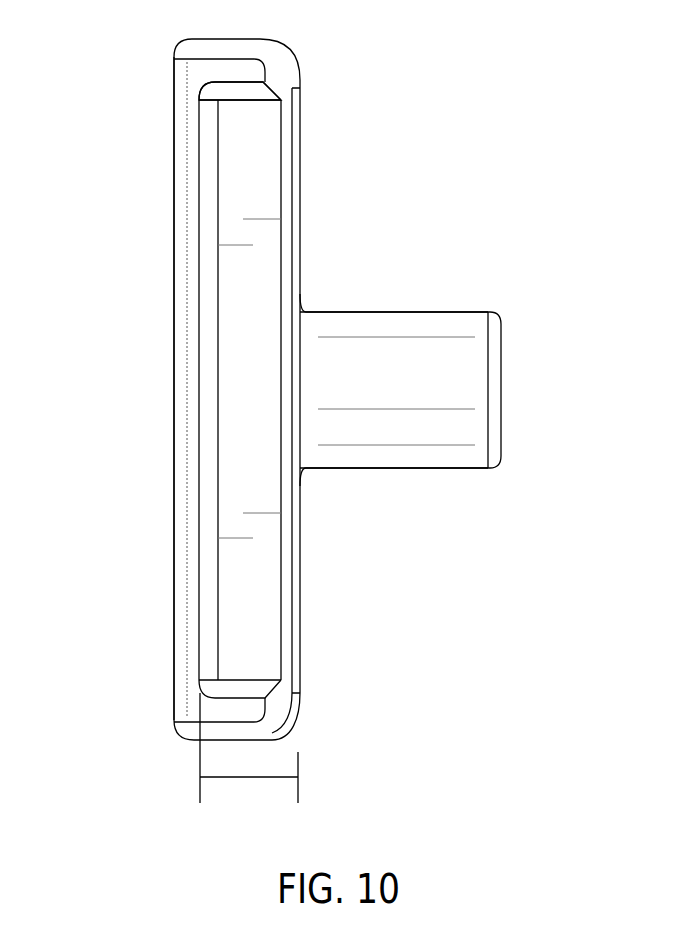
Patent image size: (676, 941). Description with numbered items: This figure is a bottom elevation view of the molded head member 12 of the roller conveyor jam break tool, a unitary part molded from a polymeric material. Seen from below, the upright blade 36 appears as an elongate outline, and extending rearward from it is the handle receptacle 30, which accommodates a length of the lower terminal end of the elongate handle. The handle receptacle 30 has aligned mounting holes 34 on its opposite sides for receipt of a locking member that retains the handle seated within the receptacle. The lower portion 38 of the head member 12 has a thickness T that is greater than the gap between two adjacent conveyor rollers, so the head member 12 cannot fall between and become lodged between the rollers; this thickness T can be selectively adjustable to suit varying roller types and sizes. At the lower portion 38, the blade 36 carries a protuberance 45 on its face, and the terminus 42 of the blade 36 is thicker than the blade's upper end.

The molded head member 12 is at (133, 400).
The handle receptacle 30 is at (495, 312).
The mounting holes 34 is at (405, 311).
The upright blade 36 is at (182, 303).
The lower portion 38 is at (325, 733).
The terminus 42 is at (287, 127).
The protuberance 45 is at (243, 117).
The thickness T is at (247, 777).